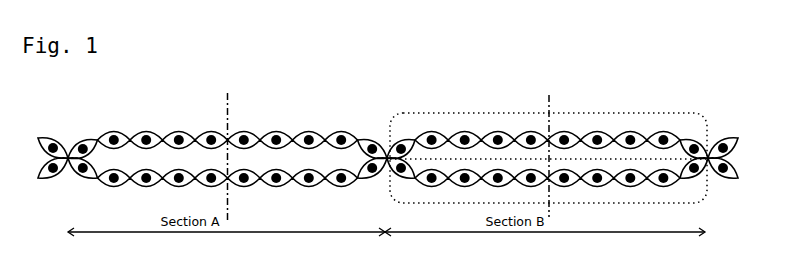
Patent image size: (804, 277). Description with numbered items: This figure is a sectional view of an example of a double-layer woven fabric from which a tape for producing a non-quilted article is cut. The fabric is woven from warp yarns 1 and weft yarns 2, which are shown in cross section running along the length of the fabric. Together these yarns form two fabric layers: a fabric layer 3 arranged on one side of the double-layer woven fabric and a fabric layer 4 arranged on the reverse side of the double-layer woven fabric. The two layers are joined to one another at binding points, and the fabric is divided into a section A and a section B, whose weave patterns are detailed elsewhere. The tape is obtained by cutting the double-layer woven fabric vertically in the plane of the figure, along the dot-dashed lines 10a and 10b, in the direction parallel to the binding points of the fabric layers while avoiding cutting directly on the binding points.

The warp yarns 1 is at (118, 134).
The weft yarns 2 is at (148, 133).
The fabric layer on one side 3 is at (485, 113).
The fabric layer on the reverse side 4 is at (391, 181).
The dot-dashed line 10a is at (240, 153).
The dot-dashed line 10b is at (561, 150).